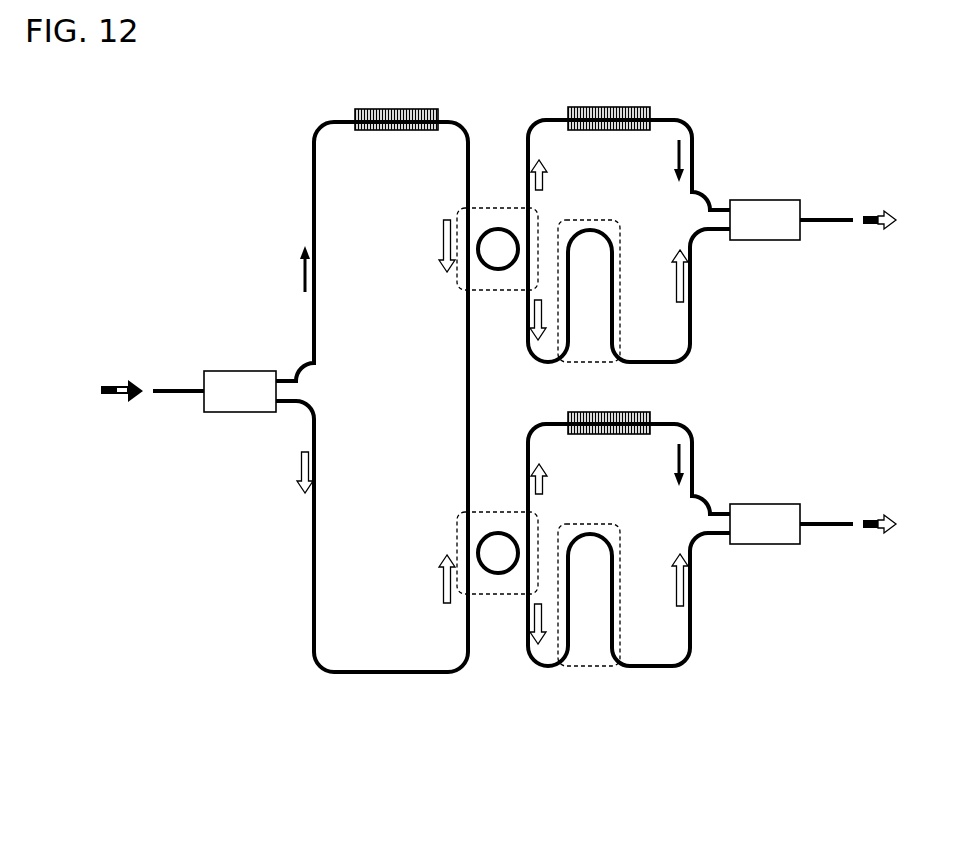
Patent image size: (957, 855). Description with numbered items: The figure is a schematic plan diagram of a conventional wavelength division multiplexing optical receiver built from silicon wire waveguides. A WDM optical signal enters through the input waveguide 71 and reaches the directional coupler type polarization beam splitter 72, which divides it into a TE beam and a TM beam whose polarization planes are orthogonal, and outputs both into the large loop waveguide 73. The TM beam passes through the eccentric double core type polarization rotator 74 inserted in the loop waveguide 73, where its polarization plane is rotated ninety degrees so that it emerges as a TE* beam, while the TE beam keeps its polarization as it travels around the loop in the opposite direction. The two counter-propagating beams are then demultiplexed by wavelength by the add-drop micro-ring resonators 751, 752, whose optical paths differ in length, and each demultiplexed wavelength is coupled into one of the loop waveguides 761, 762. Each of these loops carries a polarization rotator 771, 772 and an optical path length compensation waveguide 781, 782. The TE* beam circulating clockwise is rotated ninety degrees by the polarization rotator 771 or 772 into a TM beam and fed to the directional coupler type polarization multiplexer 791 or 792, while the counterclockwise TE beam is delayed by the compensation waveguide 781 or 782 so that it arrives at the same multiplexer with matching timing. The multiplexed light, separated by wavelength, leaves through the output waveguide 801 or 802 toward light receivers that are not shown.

The input waveguide 71 is at (175, 389).
The polarization beam splitter 72 is at (243, 371).
The loop waveguide 73 is at (390, 674).
The polarization rotator 74 is at (399, 109).
The add-drop micro-ring resonator 751 is at (497, 224).
The add-drop micro-ring resonator 752 is at (497, 528).
The loop waveguide 761 is at (641, 241).
The loop waveguide 762 is at (641, 545).
The polarization rotator 771 is at (609, 94).
The polarization rotator 772 is at (609, 398).
The optical path length compensation waveguide 781 is at (589, 265).
The optical path length compensation waveguide 782 is at (589, 569).
The polarization multiplexer 791 is at (765, 195).
The polarization multiplexer 792 is at (765, 499).
The output waveguide 801 is at (848, 189).
The output waveguide 802 is at (848, 493).